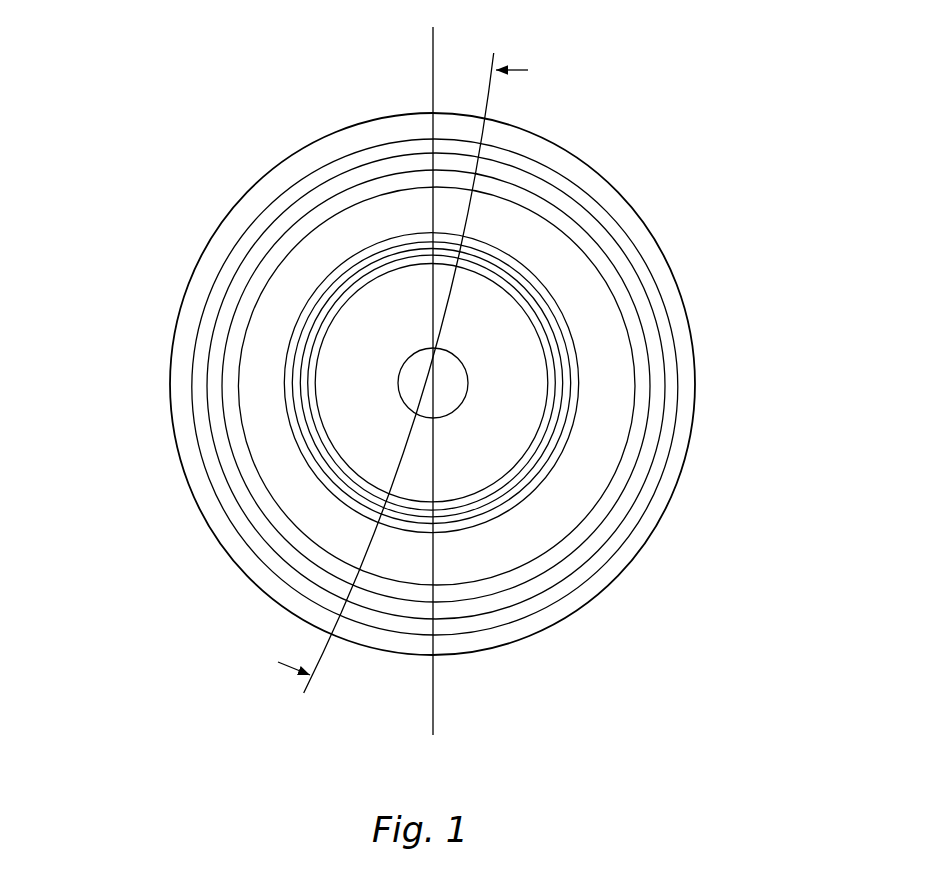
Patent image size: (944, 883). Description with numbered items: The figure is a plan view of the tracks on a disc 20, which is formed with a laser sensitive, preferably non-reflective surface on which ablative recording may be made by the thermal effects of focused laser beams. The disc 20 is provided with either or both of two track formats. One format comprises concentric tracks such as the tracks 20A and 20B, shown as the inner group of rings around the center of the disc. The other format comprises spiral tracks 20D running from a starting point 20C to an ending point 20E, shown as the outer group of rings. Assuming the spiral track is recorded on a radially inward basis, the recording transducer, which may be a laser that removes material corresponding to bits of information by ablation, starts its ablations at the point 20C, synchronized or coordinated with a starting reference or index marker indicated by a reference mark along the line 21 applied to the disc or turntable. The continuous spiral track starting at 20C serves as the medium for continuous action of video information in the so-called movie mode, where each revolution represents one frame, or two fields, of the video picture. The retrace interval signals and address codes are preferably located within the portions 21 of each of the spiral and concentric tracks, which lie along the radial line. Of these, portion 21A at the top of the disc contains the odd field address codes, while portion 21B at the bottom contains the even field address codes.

The disc 20 is at (620, 192).
The concentric track 20A is at (558, 305).
The concentric track 20B is at (568, 342).
The starting point 20C is at (436, 112).
The spiral track 20D is at (242, 258).
The ending point 20E is at (432, 187).
The line 21 is at (433, 42).
The portion 21A is at (431, 62).
The portion 21B is at (435, 702).